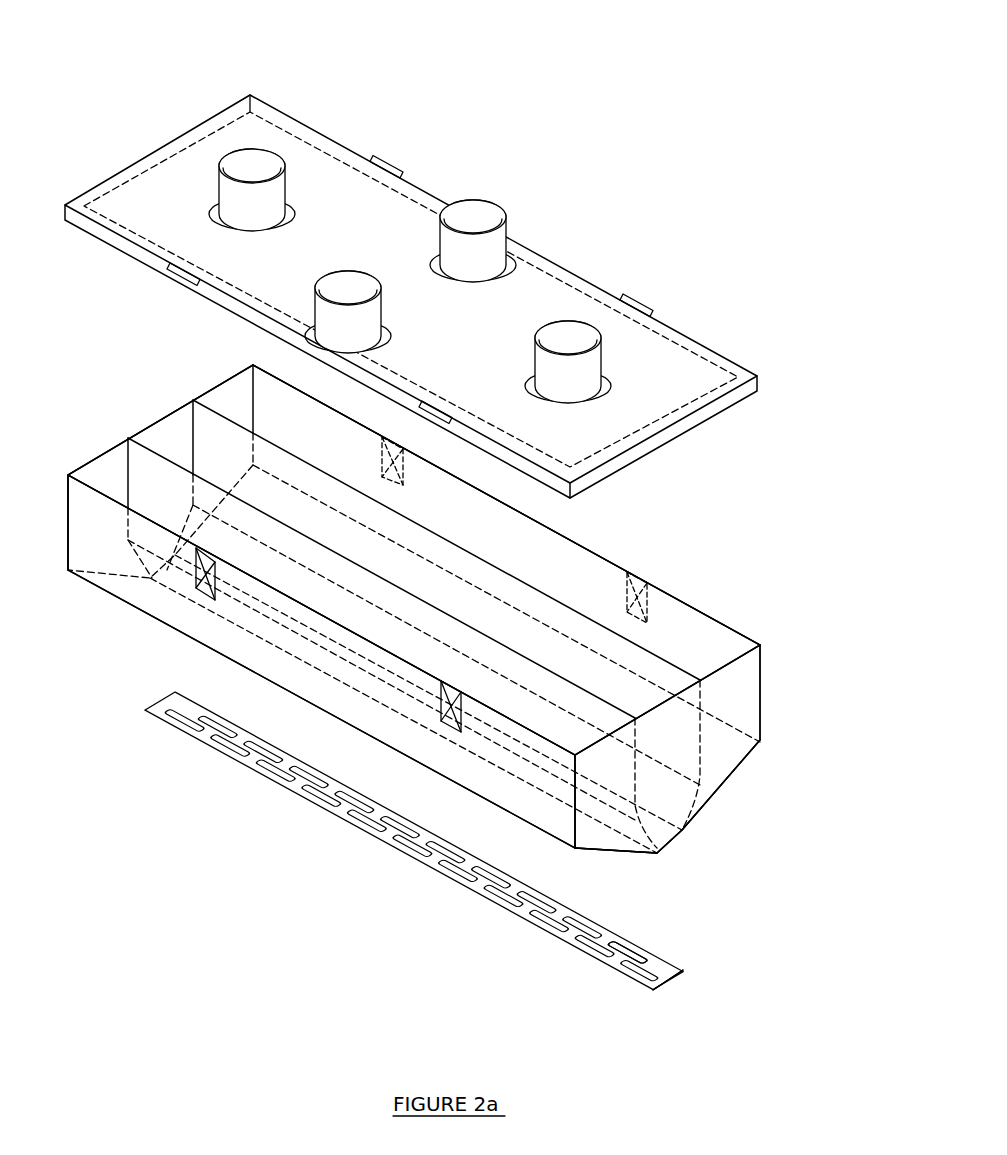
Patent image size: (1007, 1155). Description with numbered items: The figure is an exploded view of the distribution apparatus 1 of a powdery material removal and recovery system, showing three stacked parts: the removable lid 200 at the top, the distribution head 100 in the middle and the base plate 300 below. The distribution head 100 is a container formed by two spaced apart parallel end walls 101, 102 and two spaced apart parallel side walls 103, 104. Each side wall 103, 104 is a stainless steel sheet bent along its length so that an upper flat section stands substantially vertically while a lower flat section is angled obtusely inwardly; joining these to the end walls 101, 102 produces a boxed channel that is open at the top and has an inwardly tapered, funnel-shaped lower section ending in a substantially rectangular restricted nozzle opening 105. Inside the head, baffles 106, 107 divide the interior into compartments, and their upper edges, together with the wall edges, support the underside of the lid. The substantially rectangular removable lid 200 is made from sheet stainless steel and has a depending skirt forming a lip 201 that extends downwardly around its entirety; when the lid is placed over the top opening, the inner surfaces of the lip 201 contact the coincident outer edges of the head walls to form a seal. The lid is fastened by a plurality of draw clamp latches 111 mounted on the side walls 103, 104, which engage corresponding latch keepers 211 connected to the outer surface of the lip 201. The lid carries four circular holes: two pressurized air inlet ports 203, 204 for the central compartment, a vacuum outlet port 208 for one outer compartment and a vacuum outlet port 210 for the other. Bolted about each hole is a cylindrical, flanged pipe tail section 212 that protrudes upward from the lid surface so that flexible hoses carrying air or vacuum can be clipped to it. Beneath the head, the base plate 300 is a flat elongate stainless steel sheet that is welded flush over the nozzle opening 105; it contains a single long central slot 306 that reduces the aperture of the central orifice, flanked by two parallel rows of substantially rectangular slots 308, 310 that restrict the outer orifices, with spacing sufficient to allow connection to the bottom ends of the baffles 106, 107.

The distribution apparatus 1 is at (455, 560).
The distribution head 100 is at (390, 609).
The end wall 101 is at (97, 462).
The end wall 102 is at (743, 700).
The side wall 103 is at (200, 638).
The side wall 104 is at (707, 610).
The nozzle opening 105 is at (685, 849).
The baffle 106 is at (155, 472).
The baffle 107 is at (213, 435).
The draw clamp latch 111 is at (632, 586).
The removable lid 200 is at (411, 249).
The lip 201 is at (108, 239).
The pressurized air inlet port 203 is at (258, 180).
The pressurized air inlet port 204 is at (597, 348).
The vacuum outlet port 208 is at (345, 305).
The vacuum outlet port 210 is at (505, 217).
The latch keeper 211 is at (387, 155).
The pipe tail section 212 is at (252, 163).
The base plate 300 is at (414, 841).
The central slot 306 is at (667, 978).
The row of slots 308 is at (631, 1006).
The row of slots 310 is at (724, 987).